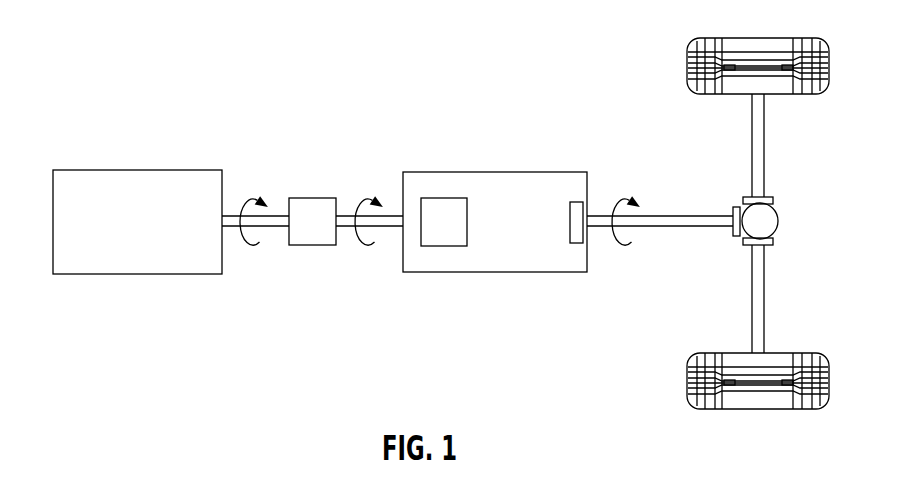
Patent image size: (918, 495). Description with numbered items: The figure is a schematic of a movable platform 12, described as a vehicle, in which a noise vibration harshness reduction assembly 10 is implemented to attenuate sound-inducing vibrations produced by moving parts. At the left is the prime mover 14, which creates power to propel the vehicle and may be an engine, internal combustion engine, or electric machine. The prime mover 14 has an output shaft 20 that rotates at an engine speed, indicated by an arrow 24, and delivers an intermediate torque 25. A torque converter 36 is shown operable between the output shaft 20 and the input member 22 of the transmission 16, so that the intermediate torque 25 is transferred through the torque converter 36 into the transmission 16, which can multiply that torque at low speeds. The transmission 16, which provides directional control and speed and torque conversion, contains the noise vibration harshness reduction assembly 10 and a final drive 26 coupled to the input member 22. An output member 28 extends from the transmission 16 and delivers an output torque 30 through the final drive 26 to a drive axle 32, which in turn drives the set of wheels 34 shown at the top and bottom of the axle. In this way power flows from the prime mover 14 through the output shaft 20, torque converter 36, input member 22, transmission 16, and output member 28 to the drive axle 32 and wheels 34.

The noise vibration harshness reduction assembly 10 is at (443, 247).
The movable platform 12 is at (113, 62).
The prime mover 14 is at (107, 169).
The transmission 16 is at (453, 171).
The output shaft 20 is at (278, 228).
The input member 22 is at (398, 228).
The arrow indicating engine speed 24 is at (232, 179).
The intermediate torque 25 is at (256, 197).
The final drive 26 is at (577, 245).
The output member 28 is at (683, 228).
The output torque 30 is at (628, 198).
The drive axle 32 is at (767, 156).
The wheels 34 is at (695, 40).
The torque converter 36 is at (312, 197).